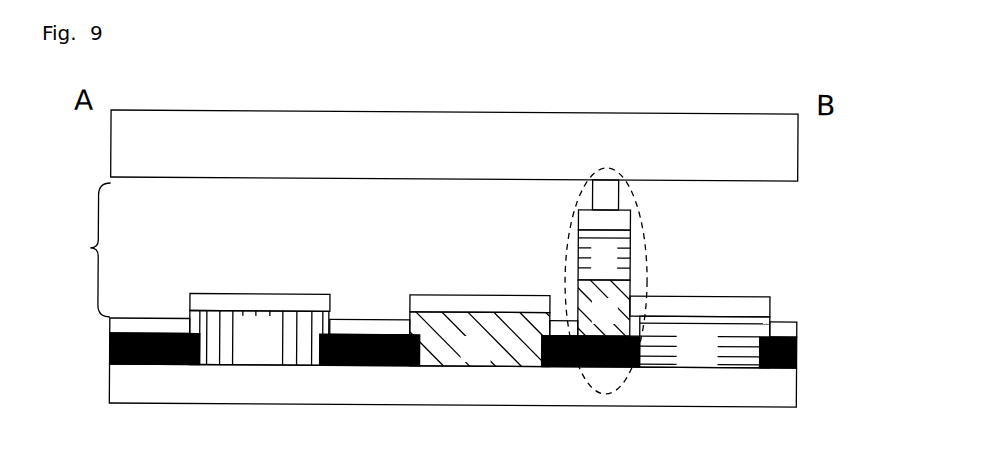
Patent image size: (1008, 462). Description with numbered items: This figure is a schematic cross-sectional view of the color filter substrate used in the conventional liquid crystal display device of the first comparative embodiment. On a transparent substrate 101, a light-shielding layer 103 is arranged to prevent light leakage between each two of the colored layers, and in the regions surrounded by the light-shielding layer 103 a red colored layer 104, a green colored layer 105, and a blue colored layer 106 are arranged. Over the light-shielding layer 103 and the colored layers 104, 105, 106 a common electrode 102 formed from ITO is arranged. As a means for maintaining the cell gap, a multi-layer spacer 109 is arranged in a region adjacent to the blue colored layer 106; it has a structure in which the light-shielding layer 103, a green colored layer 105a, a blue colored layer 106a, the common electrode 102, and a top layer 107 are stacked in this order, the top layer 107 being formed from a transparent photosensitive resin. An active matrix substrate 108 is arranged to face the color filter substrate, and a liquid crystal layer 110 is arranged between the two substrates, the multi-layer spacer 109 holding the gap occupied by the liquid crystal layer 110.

The transparent substrate 101 is at (790, 391).
The common electrode 102 is at (135, 325).
The light-shielding layer 103 is at (133, 367).
The red colored layer 104 is at (220, 357).
The green colored layer 105 is at (440, 357).
The green colored layer 105a is at (633, 282).
The blue colored layer 106 is at (658, 360).
The blue colored layer 106a is at (587, 238).
The top layer 107 is at (608, 190).
The active matrix substrate 108 is at (790, 146).
The multi-layer spacer 109 is at (604, 164).
The liquid crystal layer 110 is at (74, 250).